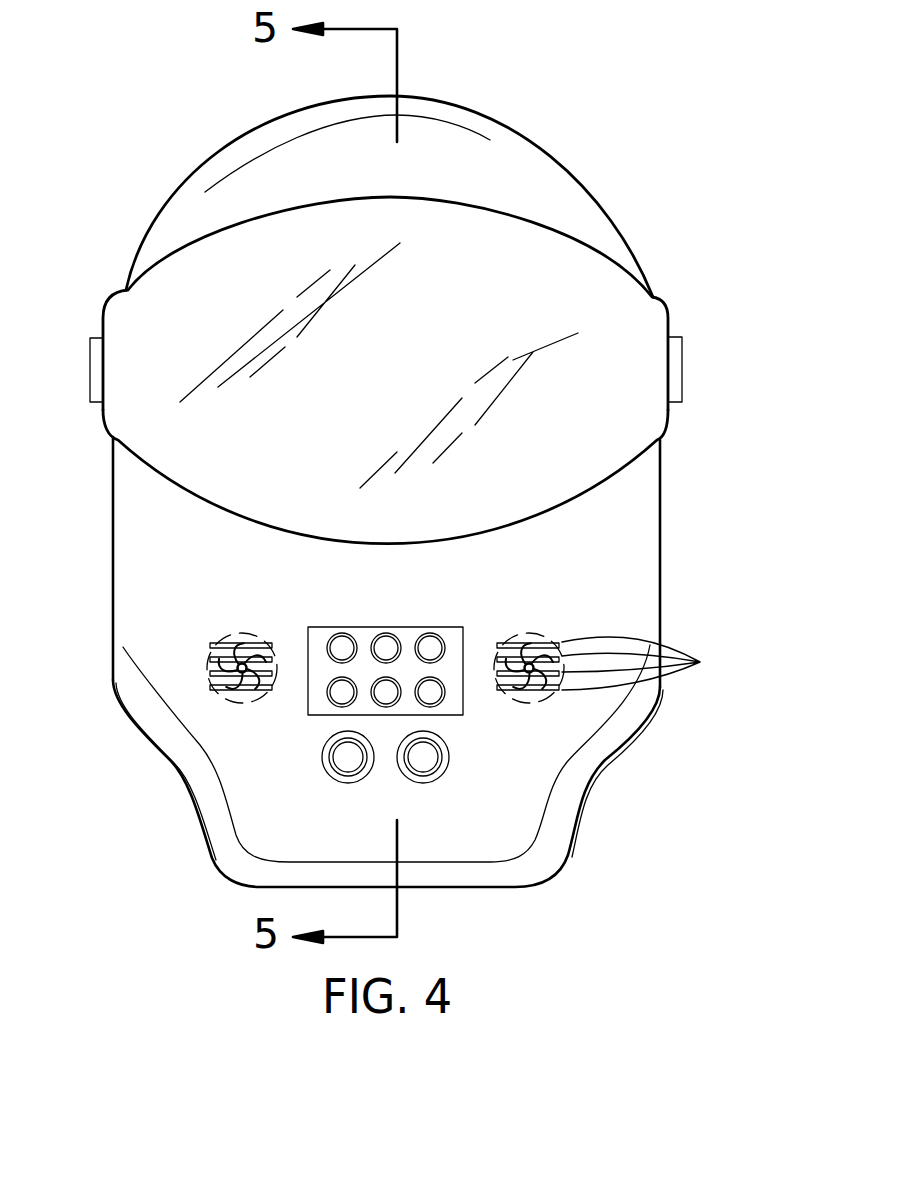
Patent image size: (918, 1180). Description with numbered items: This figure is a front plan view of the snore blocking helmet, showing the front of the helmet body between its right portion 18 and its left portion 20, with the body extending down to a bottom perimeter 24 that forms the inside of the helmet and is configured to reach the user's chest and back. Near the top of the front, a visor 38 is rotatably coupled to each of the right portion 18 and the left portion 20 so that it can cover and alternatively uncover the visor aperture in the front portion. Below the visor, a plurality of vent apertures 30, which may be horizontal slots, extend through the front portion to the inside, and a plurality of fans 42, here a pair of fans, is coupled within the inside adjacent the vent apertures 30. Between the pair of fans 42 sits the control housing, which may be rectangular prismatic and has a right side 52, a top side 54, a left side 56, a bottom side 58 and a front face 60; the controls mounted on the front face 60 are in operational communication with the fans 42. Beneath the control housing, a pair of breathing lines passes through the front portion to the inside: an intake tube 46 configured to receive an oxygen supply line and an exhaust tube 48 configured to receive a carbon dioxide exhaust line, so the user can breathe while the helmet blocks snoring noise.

The right portion 18 is at (113, 541).
The left portion 20 is at (660, 473).
The bottom perimeter 24 is at (582, 795).
The plurality of vent apertures 30 is at (658, 663).
The visor 38 is at (633, 320).
The plurality of fans 42 is at (530, 640).
The intake tube 46 is at (433, 768).
The exhaust tube 48 is at (333, 763).
The right side 52 is at (308, 679).
The top side 54 is at (408, 627).
The left side 56 is at (477, 630).
The bottom side 58 is at (445, 710).
The front face 60 is at (314, 636).